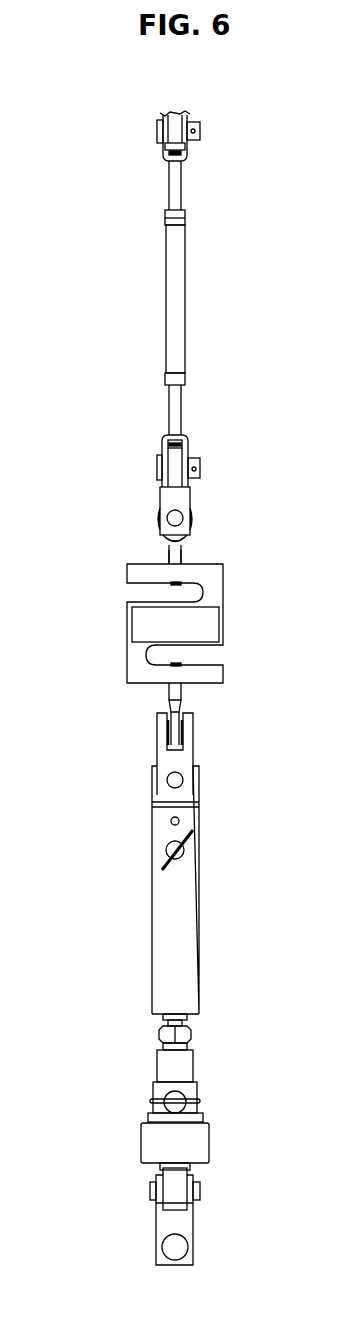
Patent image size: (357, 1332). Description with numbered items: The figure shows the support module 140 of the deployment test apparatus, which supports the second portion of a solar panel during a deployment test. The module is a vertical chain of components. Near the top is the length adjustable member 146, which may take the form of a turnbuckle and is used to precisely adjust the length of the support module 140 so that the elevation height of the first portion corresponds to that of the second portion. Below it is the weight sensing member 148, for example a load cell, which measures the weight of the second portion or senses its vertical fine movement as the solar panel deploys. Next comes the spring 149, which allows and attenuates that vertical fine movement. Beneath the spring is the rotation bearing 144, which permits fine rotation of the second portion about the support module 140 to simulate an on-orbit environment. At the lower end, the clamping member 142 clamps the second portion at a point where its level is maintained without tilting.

The support module 140 is at (97, 107).
The clamping member 142 is at (188, 1222).
The rotation bearing 144 is at (204, 1142).
The length adjustable member 146 is at (186, 298).
The weight sensing member 148 is at (218, 581).
The spring 149 is at (195, 911).